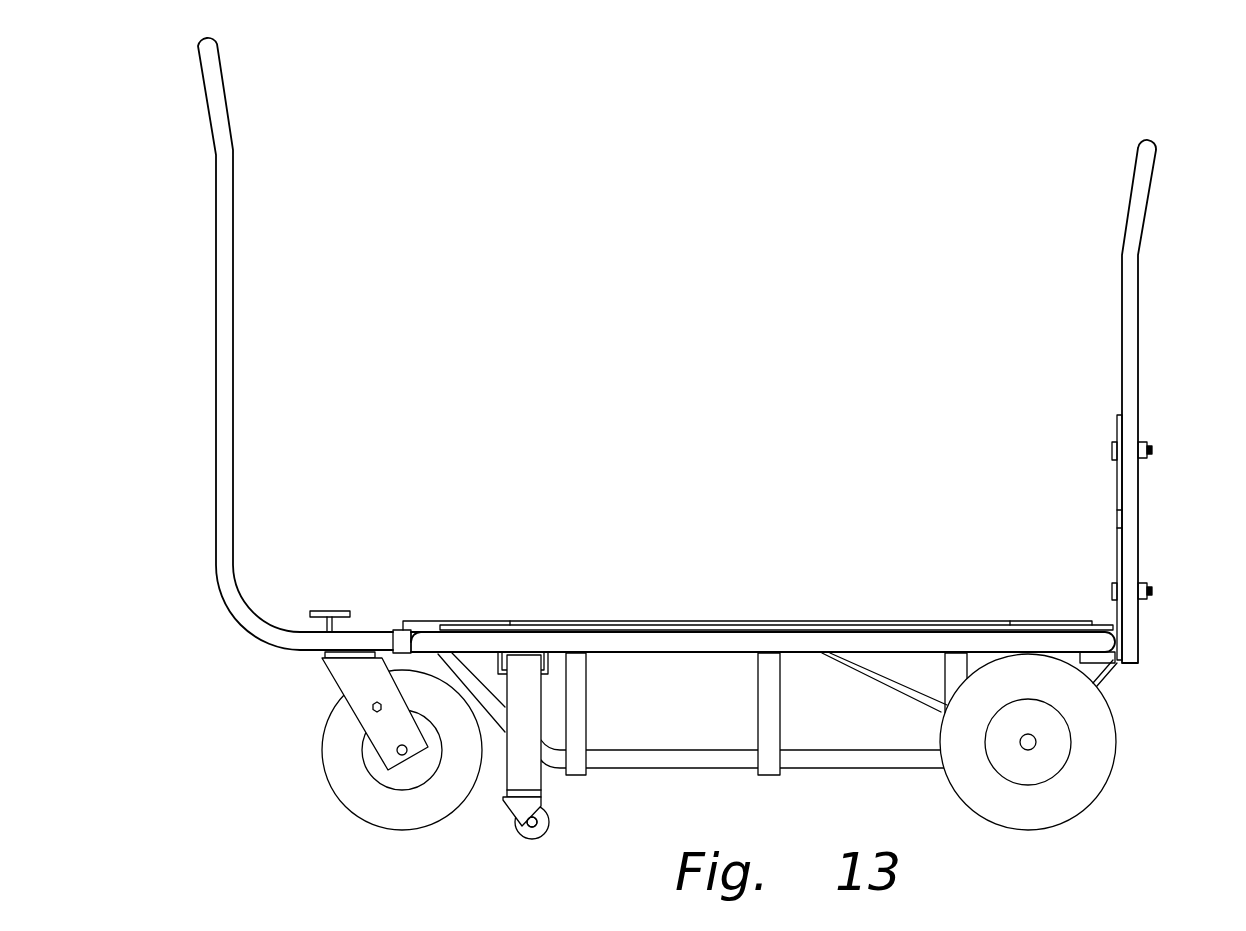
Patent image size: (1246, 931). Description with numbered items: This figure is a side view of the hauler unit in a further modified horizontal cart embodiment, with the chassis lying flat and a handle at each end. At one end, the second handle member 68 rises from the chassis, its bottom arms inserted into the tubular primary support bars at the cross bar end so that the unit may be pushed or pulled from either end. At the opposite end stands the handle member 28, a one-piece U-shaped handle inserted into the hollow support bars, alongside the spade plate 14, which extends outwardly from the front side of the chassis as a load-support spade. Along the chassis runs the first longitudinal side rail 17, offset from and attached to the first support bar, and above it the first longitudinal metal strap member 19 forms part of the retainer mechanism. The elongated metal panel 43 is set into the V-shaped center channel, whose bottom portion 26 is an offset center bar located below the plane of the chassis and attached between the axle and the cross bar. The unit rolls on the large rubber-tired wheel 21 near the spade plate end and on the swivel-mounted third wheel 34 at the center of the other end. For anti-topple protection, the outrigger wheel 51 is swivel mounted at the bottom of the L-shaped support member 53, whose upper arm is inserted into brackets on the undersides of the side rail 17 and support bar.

The second handle member 68 is at (234, 232).
The handle member 28 is at (1139, 298).
The spade plate 14 is at (1120, 492).
The first longitudinal metal strap member 19 is at (592, 621).
The elongated metal panel 43 is at (693, 621).
The first longitudinal side rail 17 is at (650, 650).
The bottom portion (offset center bar) 26 is at (610, 750).
The third wheel 34 is at (322, 742).
The L-shaped support member 53 is at (545, 777).
The outrigger wheel 51 is at (520, 838).
The rubber-tired wheel 21 is at (1116, 758).